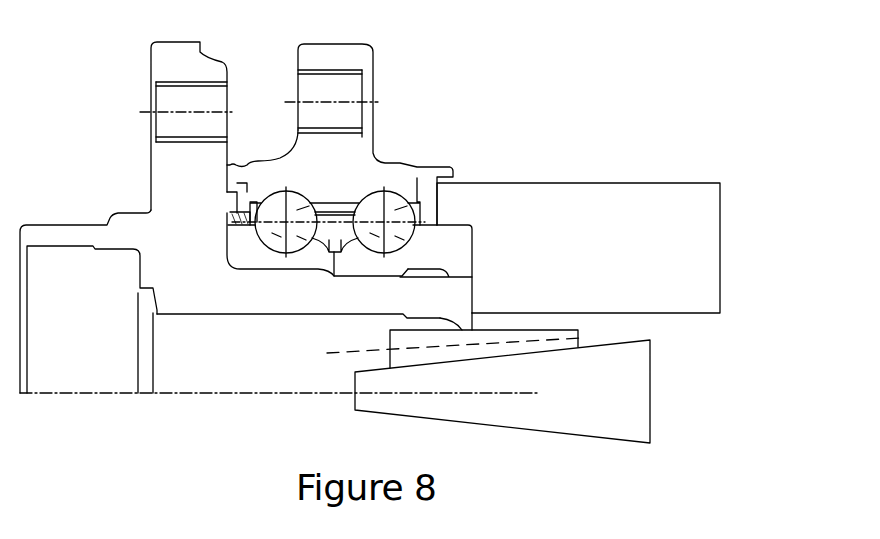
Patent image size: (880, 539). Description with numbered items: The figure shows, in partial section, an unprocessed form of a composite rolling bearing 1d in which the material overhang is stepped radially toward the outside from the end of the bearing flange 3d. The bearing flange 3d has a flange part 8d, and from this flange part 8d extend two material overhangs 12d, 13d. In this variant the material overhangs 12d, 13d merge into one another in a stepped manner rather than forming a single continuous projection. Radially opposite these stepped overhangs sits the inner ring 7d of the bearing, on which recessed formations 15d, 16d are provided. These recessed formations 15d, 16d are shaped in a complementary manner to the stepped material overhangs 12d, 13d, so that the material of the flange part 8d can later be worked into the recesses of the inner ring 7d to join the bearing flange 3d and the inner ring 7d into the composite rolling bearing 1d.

The composite rolling bearing 1d is at (593, 76).
The bearing flange 3d is at (160, 177).
The inner ring 7d is at (433, 238).
The flange part 8d is at (272, 302).
The material overhang 12d is at (462, 320).
The material overhang 13d is at (420, 313).
The recessed formation 15d is at (463, 268).
The recessed formation 16d is at (422, 273).